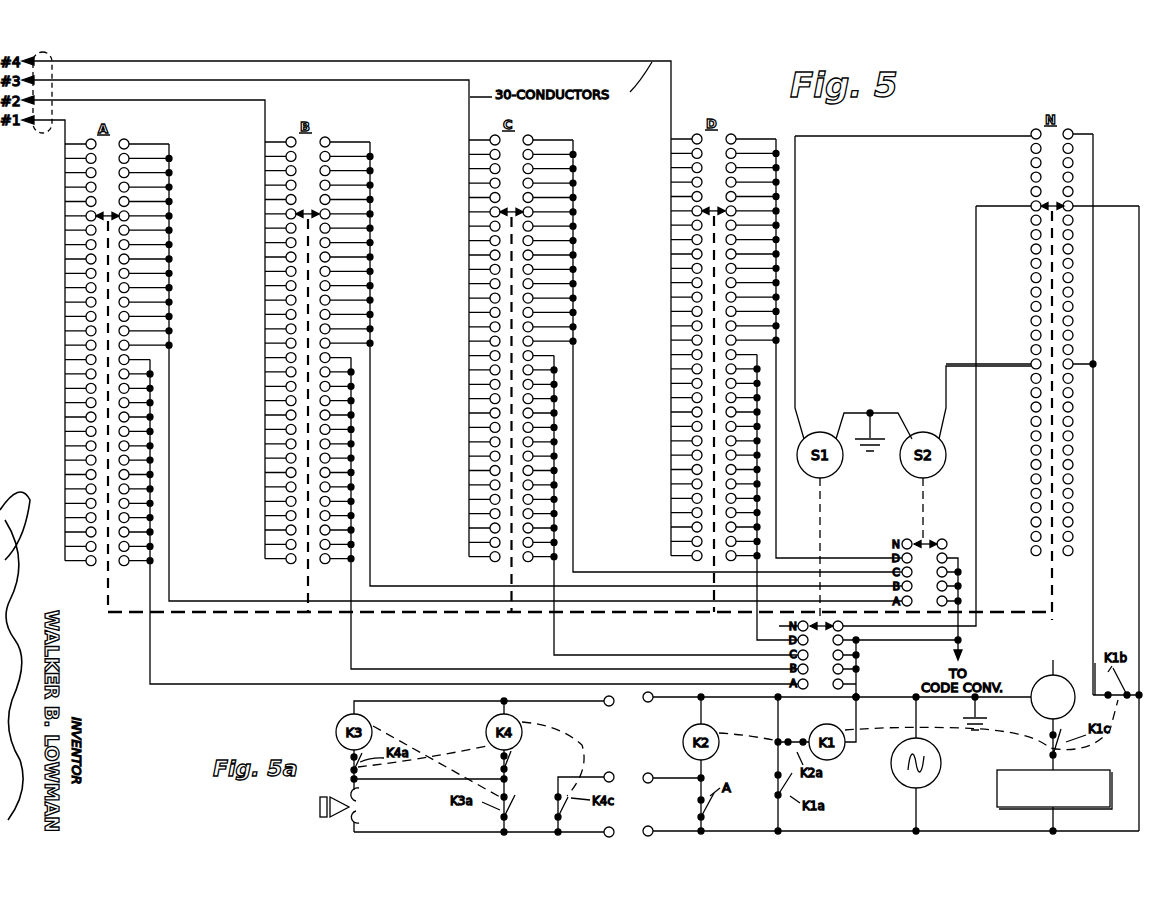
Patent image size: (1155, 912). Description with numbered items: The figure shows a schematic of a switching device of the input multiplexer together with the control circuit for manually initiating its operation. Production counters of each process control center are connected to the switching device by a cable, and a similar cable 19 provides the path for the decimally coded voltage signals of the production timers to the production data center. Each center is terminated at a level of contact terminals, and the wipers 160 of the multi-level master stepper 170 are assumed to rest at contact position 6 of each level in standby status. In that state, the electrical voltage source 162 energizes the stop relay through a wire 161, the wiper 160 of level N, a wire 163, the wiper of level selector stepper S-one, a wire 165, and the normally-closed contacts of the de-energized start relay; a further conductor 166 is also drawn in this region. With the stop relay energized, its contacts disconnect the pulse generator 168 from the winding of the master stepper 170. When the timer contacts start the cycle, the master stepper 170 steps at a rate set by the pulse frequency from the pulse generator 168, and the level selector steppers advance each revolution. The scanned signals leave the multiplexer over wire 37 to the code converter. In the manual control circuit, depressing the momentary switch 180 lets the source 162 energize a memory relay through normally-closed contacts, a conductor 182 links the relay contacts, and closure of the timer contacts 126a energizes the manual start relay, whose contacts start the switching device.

In FIG. 5, the contact position six 6 is at (40, 134).
In FIG. 5, the cable 19 is at (26, 109).
In FIG. 5, the wire 37 is at (960, 642).
In FIG. 5, the wiper 160 is at (1040, 206).
In FIG. 5, the wire 161 is at (1139, 431).
In FIG. 5, the wire 163 is at (977, 462).
In FIG. 5, the conductor 166 is at (1093, 514).
In FIG. 5, the wire 165 is at (778, 712).
In FIG. 5, the electrical voltage source 162 is at (934, 781).
In FIG. 5, the master stepper 170 is at (1038, 713).
In FIG. 5, the pulse generator 168 is at (1018, 770).
In FIG. 5A, the momentary type switch 180 is at (320, 806).
In FIG. 5A, the conductor 182 is at (510, 779).
In FIG. 5A, the contacts of timer 126a is at (514, 762).